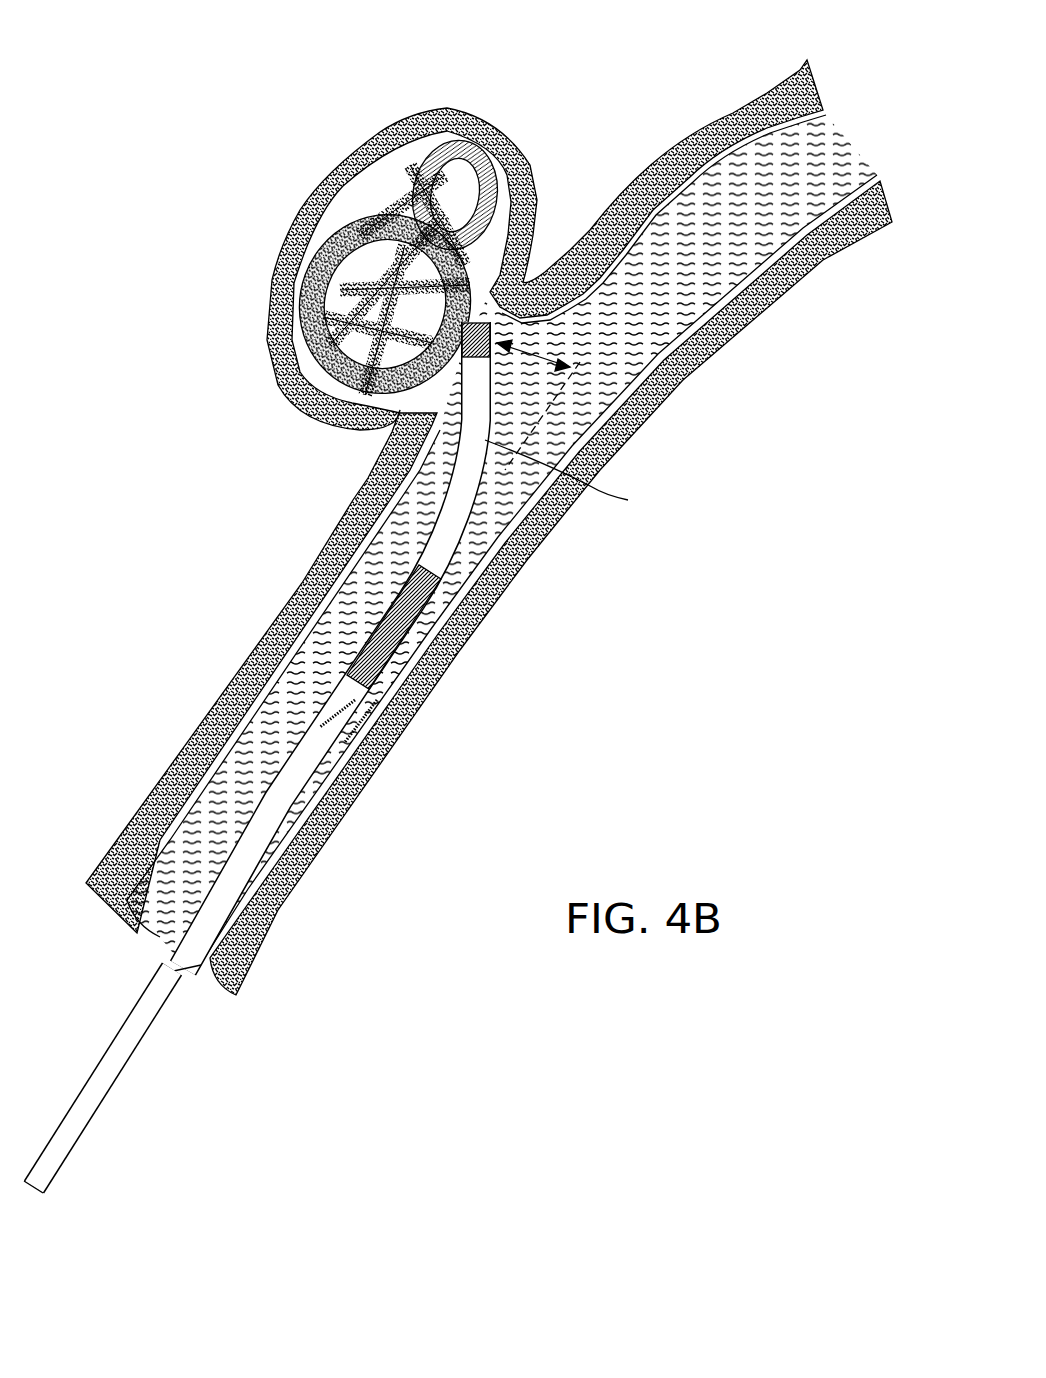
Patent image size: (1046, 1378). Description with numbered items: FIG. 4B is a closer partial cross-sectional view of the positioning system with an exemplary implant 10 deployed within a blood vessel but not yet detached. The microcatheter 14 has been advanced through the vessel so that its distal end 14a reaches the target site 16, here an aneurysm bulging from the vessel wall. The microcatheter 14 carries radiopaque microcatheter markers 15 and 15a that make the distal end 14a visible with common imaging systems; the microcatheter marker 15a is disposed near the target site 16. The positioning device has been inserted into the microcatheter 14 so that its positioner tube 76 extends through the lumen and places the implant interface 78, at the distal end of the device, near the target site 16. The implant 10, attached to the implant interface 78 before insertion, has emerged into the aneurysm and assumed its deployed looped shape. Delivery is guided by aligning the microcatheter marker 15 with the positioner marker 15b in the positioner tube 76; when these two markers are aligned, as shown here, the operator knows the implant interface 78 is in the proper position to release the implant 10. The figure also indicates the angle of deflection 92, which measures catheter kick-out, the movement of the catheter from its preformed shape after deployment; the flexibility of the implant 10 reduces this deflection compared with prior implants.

The implant 10 is at (313, 257).
The microcatheter 14 is at (233, 880).
The distal end of the microcatheter 14a is at (582, 479).
The microcatheter marker 15 is at (357, 713).
The microcatheter marker 15a is at (457, 403).
The positioner marker 15b is at (440, 632).
The target site 16 is at (335, 95).
The positioner tube 76 is at (433, 552).
The implant interface 78 is at (530, 205).
The angle of deflection 92 is at (537, 353).